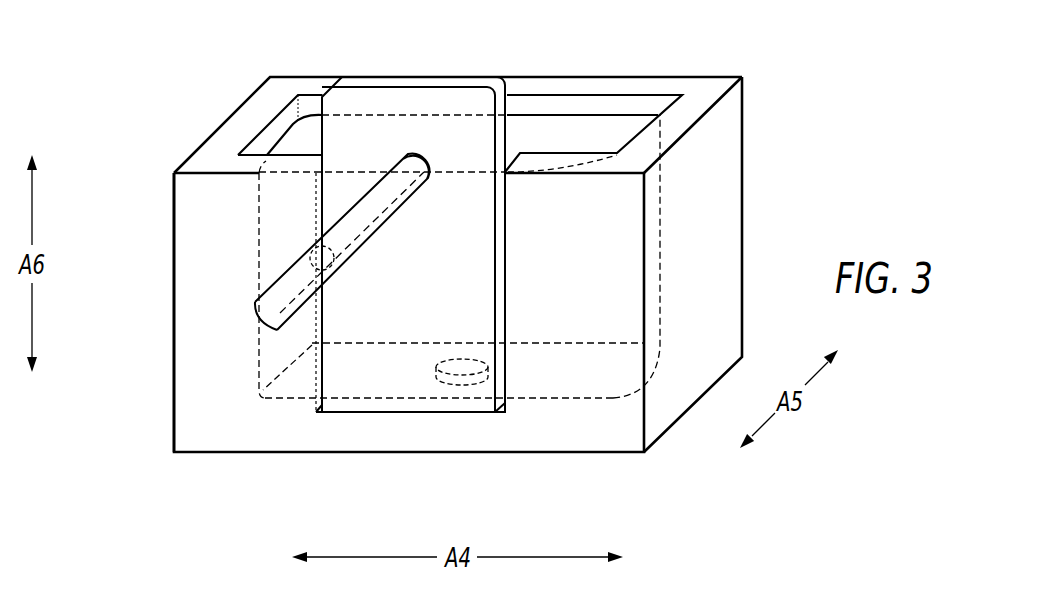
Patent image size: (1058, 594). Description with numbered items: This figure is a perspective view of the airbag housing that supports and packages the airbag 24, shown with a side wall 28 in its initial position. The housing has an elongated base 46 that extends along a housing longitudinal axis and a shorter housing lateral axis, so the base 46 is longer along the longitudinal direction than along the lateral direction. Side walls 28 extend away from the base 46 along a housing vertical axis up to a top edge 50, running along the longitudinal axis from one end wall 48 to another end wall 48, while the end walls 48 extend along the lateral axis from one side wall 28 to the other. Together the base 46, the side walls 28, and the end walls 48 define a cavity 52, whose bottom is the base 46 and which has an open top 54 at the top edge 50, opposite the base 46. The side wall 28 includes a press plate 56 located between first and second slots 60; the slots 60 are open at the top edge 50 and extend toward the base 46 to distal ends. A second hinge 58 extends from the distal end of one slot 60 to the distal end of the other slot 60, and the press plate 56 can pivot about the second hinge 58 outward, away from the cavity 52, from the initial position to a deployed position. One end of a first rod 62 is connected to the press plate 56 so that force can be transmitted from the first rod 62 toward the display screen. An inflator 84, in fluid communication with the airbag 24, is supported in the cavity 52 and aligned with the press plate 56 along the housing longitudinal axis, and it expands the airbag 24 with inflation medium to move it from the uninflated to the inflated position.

The airbag 24 is at (597, 133).
The side wall 28 is at (198, 303).
The base 46 is at (454, 255).
The end wall 48 is at (174, 268).
The top edge 50 is at (247, 127).
The cavity 52 is at (660, 243).
The open top 54 is at (311, 105).
The press plate 56 is at (443, 105).
The second hinge 58 is at (374, 399).
The slot 60 is at (313, 217).
The first rod 62 is at (386, 222).
The inflator 84 is at (457, 386).